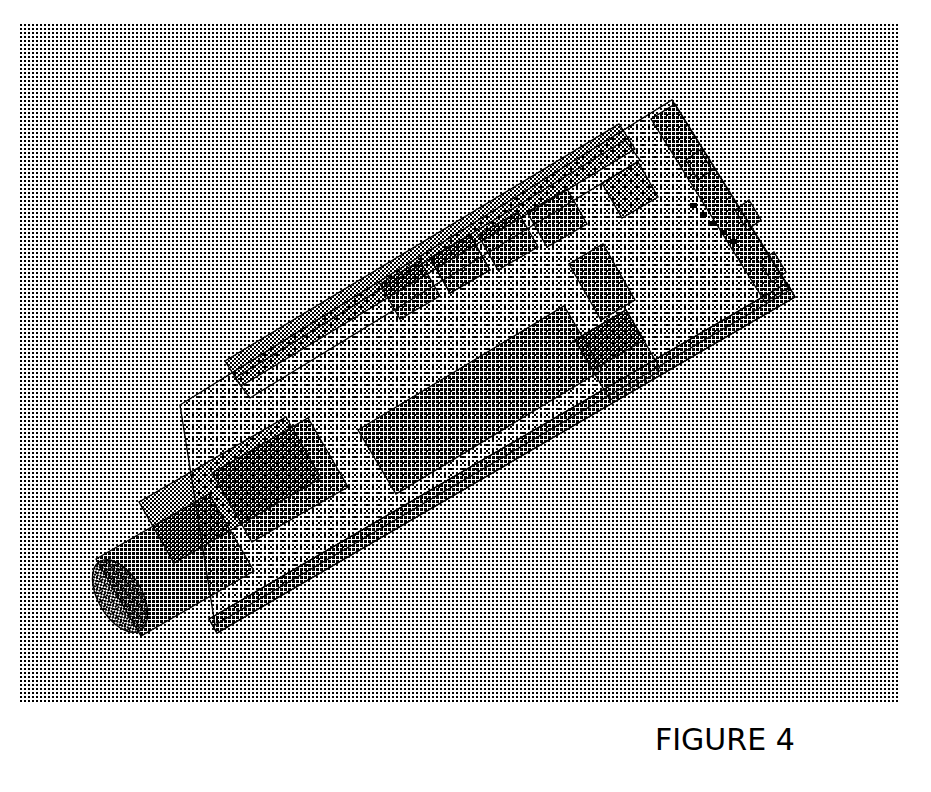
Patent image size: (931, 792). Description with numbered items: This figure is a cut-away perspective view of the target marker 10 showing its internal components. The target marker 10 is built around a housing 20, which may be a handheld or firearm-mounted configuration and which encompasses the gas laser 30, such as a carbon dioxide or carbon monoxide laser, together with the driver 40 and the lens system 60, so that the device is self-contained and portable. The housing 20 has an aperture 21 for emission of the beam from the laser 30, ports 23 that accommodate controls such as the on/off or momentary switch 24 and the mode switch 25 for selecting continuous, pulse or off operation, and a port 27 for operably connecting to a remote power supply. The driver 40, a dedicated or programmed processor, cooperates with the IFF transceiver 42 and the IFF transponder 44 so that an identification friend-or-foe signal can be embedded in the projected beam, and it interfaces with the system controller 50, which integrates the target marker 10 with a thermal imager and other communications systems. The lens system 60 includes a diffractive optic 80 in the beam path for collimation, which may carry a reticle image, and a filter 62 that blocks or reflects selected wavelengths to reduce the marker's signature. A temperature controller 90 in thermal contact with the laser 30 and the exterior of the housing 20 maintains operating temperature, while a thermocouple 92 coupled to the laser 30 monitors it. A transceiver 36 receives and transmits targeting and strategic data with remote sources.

The target marker 10 is at (478, 528).
The housing 20 is at (740, 338).
The aperture 21 is at (227, 462).
The ports 23 is at (700, 215).
The on/off or momentary switch 24 is at (755, 262).
The mode switch 25 is at (720, 225).
The port 27 is at (680, 168).
The gas laser 30 is at (596, 275).
The transceiver 36 is at (645, 178).
The driver 40 is at (322, 345).
The IFF transceiver 42 is at (495, 245).
The IFF transponder 44 is at (540, 195).
The system controller 50 is at (440, 285).
The lens system 60 is at (370, 600).
The filter 62 is at (143, 592).
The diffractive optic 80 is at (253, 455).
The temperature controller 90 is at (626, 378).
The thermocouple 92 is at (585, 342).